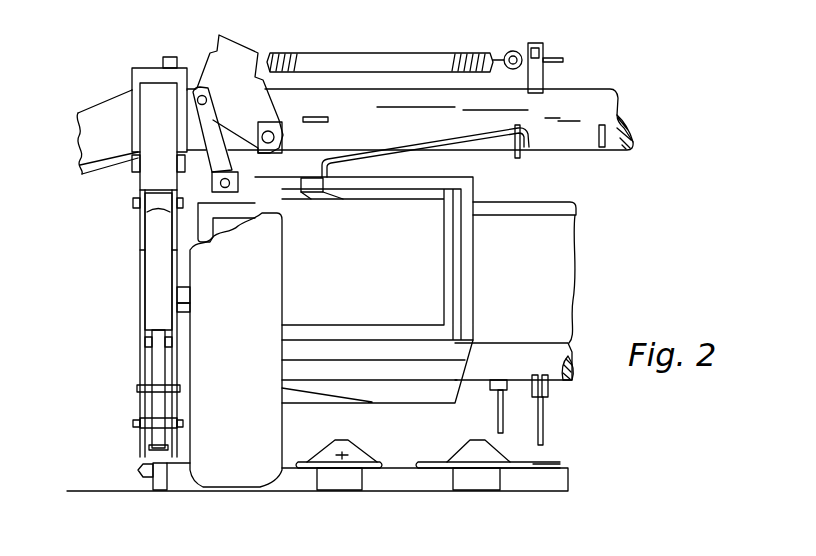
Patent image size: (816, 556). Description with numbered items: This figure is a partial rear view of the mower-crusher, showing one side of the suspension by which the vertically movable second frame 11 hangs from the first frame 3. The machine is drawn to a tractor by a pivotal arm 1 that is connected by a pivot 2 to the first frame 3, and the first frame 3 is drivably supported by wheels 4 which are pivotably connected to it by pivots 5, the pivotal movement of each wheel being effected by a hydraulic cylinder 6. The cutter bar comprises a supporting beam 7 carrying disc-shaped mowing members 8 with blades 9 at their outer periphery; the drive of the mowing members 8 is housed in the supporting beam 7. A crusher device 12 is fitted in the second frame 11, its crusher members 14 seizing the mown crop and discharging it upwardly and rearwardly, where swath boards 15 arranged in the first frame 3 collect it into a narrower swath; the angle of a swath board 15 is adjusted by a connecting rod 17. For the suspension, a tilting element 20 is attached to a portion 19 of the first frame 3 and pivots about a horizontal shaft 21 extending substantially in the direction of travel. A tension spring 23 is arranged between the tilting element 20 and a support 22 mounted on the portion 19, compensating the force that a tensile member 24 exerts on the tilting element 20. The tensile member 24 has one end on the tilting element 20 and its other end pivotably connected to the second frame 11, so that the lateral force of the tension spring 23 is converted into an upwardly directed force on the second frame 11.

The pivotal arm 1 is at (100, 118).
The pivot 2 is at (170, 57).
The first frame 3 is at (426, 132).
The wheels 4 is at (257, 305).
The pivots 5 is at (135, 421).
The hydraulic cylinder 6 is at (157, 275).
The supporting beam 7 is at (392, 494).
The mowing members 8 is at (334, 437).
The blades 9 is at (138, 469).
The second frame 11 is at (231, 213).
The crusher device 12 is at (513, 341).
The crusher members 14 is at (540, 412).
The swath boards 15 is at (388, 388).
The connecting rod 17 is at (450, 134).
The portion of first frame 19 is at (602, 115).
The tilting element 20 is at (228, 53).
The horizontal shaft 21 is at (282, 137).
The support 22 is at (538, 43).
The tension spring 23 is at (393, 60).
The tensile member 24 is at (213, 122).